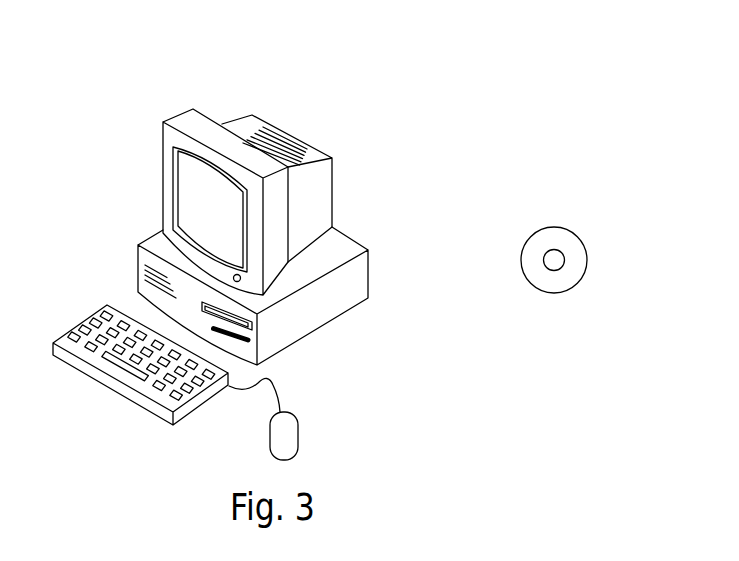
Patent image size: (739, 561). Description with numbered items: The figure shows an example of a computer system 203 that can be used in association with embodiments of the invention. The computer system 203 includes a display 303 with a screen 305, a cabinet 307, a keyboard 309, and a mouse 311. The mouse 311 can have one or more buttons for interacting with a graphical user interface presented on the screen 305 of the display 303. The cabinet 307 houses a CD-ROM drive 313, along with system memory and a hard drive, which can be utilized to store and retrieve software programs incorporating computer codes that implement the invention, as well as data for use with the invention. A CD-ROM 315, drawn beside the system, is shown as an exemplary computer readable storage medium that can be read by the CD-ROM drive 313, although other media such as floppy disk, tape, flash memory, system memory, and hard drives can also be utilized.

The computer system 203 is at (496, 104).
The display 303 is at (201, 202).
The screen 305 is at (177, 163).
The cabinet 307 is at (286, 309).
The keyboard 309 is at (137, 403).
The mouse 311 is at (298, 444).
The CD-ROM drive 313 is at (250, 342).
The CD-ROM 315 is at (554, 227).